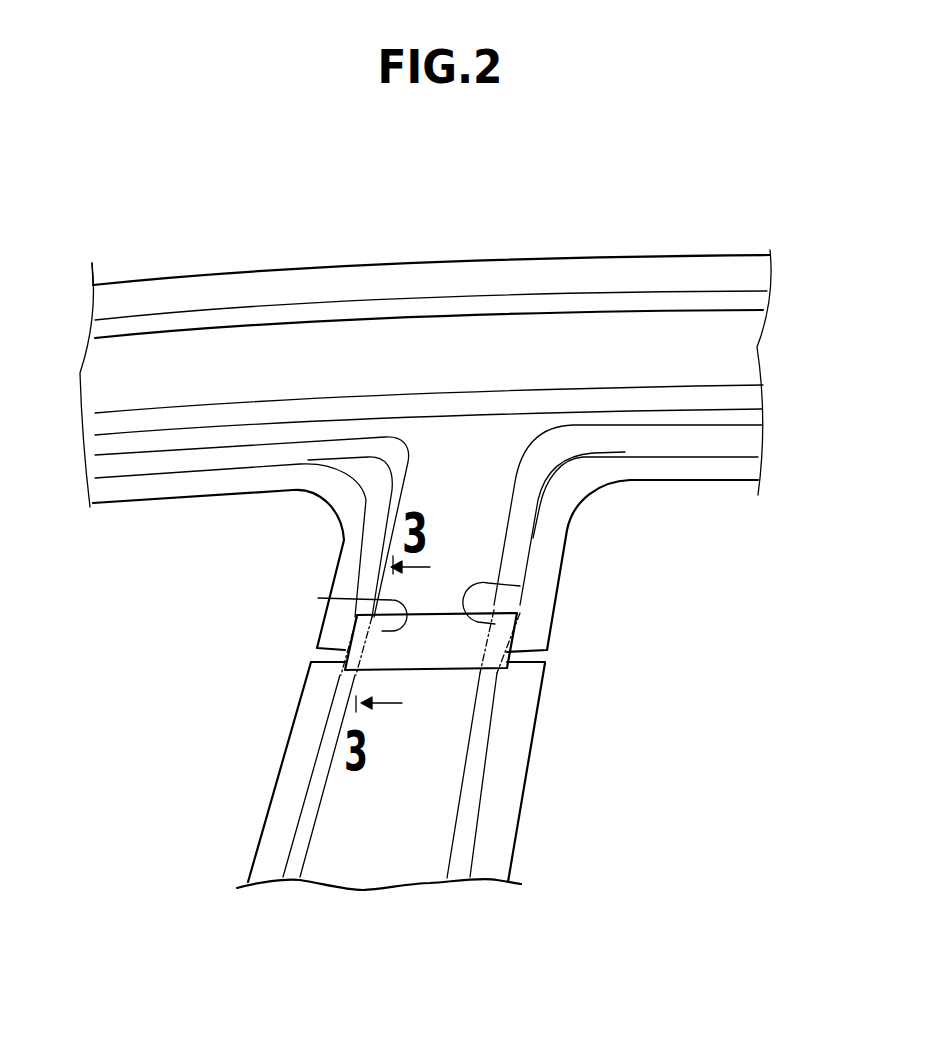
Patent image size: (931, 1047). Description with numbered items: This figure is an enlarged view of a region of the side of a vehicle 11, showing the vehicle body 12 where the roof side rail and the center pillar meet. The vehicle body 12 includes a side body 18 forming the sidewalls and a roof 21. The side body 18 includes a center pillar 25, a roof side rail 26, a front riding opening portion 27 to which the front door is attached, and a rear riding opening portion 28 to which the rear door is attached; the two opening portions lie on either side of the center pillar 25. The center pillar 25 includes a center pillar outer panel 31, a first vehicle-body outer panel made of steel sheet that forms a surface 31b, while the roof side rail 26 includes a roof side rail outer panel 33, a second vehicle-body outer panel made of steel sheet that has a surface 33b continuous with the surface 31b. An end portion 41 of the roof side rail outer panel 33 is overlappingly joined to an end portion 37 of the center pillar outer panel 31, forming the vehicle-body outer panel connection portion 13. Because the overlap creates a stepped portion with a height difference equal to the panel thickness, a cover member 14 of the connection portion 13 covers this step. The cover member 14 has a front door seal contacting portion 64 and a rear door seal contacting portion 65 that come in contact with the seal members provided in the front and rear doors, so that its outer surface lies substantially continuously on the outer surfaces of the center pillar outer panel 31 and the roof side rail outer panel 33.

The vehicle 11 is at (180, 182).
The vehicle body 12 is at (262, 272).
The roof 21 is at (582, 259).
The roof side rail 26 is at (677, 310).
The roof side rail outer panel 33 is at (717, 337).
The front riding opening portion 27 is at (173, 498).
The rear riding opening portion 28 is at (723, 482).
The surface 33b is at (466, 508).
The vehicle-body outer panel connection portion 13 is at (409, 552).
The front door seal contacting portion 64 is at (358, 600).
The rear door seal contacting portion 65 is at (520, 586).
The end portion 41 is at (500, 597).
The end portion 37 is at (466, 680).
The center pillar 25 is at (268, 808).
The side body 18 is at (347, 850).
The cover member 14 is at (438, 670).
The surface 31b is at (414, 839).
The center pillar outer panel 31 is at (383, 890).